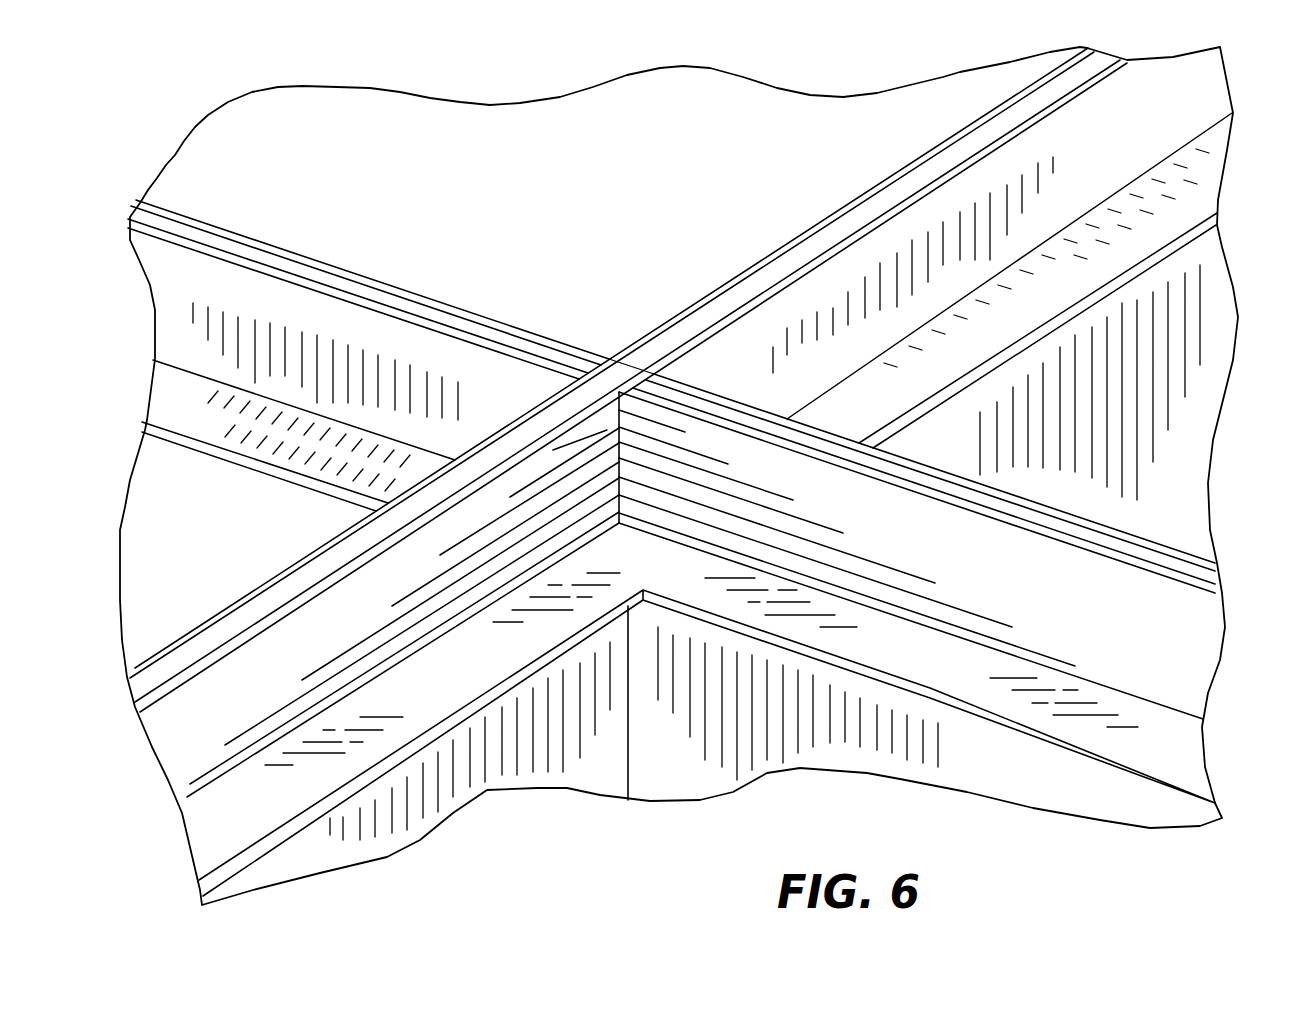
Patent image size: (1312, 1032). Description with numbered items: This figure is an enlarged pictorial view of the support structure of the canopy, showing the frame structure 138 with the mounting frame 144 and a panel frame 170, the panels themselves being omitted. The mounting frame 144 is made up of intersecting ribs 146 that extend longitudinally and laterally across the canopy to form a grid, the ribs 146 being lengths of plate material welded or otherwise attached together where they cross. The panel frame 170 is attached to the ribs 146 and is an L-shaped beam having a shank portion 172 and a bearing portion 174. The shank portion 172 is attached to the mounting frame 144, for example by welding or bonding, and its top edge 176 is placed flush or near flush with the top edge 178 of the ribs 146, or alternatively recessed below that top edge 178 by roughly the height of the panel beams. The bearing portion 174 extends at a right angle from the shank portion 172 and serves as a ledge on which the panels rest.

The frame structure 138 is at (514, 314).
The intersecting ribs 146 is at (685, 323).
The mounting frame 144 is at (606, 736).
The panel frame 170 is at (1194, 677).
The shank portion 172 is at (1178, 633).
The bearing portion 174 is at (1160, 748).
The top edge 176 is at (578, 413).
The top edge 178 is at (633, 357).